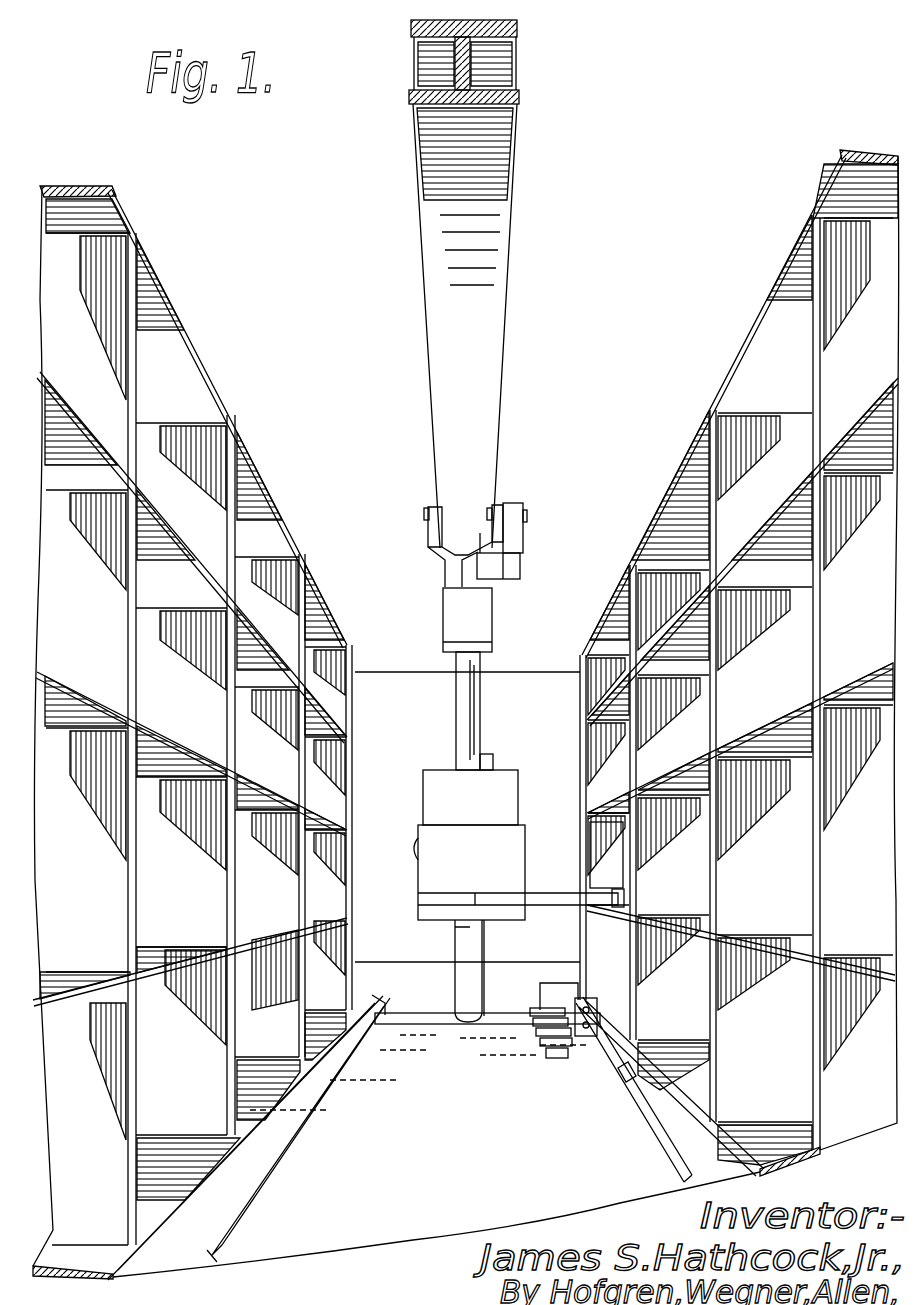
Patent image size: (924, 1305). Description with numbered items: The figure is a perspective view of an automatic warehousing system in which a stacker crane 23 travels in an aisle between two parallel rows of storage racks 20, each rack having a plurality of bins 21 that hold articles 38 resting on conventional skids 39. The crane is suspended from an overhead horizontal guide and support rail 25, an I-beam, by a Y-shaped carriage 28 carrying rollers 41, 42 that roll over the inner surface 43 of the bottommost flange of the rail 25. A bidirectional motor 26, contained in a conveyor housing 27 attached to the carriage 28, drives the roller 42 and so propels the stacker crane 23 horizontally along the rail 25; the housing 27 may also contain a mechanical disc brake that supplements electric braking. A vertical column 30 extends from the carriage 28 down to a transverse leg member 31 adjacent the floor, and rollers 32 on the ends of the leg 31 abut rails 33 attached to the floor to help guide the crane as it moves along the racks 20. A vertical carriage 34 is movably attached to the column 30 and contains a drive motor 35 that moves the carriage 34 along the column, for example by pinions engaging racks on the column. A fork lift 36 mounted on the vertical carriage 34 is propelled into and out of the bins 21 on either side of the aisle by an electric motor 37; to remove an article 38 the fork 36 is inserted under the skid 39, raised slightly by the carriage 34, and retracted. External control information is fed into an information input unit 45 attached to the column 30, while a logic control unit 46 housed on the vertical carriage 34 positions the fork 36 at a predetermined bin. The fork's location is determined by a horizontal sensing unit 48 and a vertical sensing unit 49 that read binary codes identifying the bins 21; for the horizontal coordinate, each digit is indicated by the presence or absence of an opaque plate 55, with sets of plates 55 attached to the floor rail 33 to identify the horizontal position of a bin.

The storage rack 20 is at (215, 382).
The bin 21 is at (195, 520).
The stacker crane 23 is at (529, 647).
The overhead horizontal guide and support rail 25 is at (495, 265).
The motor 26 is at (527, 518).
The conveyor housing 27 is at (515, 548).
The Y-shaped carriage 28 is at (440, 548).
The column 30 is at (480, 712).
The transverse leg member 31 is at (447, 1024).
The roller 32 is at (386, 1003).
The rail 33 is at (300, 1130).
The vertical carriage 34 is at (485, 871).
The drive motor 35 is at (414, 850).
The fork lift 36 is at (560, 894).
The electric motor 37 is at (462, 930).
The article 38 is at (614, 866).
The skid 39 is at (625, 897).
The roller 41 is at (432, 505).
The roller 42 is at (482, 500).
The inner surface 43 is at (420, 86).
The information input unit 45 is at (481, 622).
The logic control unit 46 is at (484, 808).
The horizontal sensing unit 48 is at (543, 1070).
The vertical sensing unit 49 is at (495, 760).
The opaque plate 55 is at (568, 985).